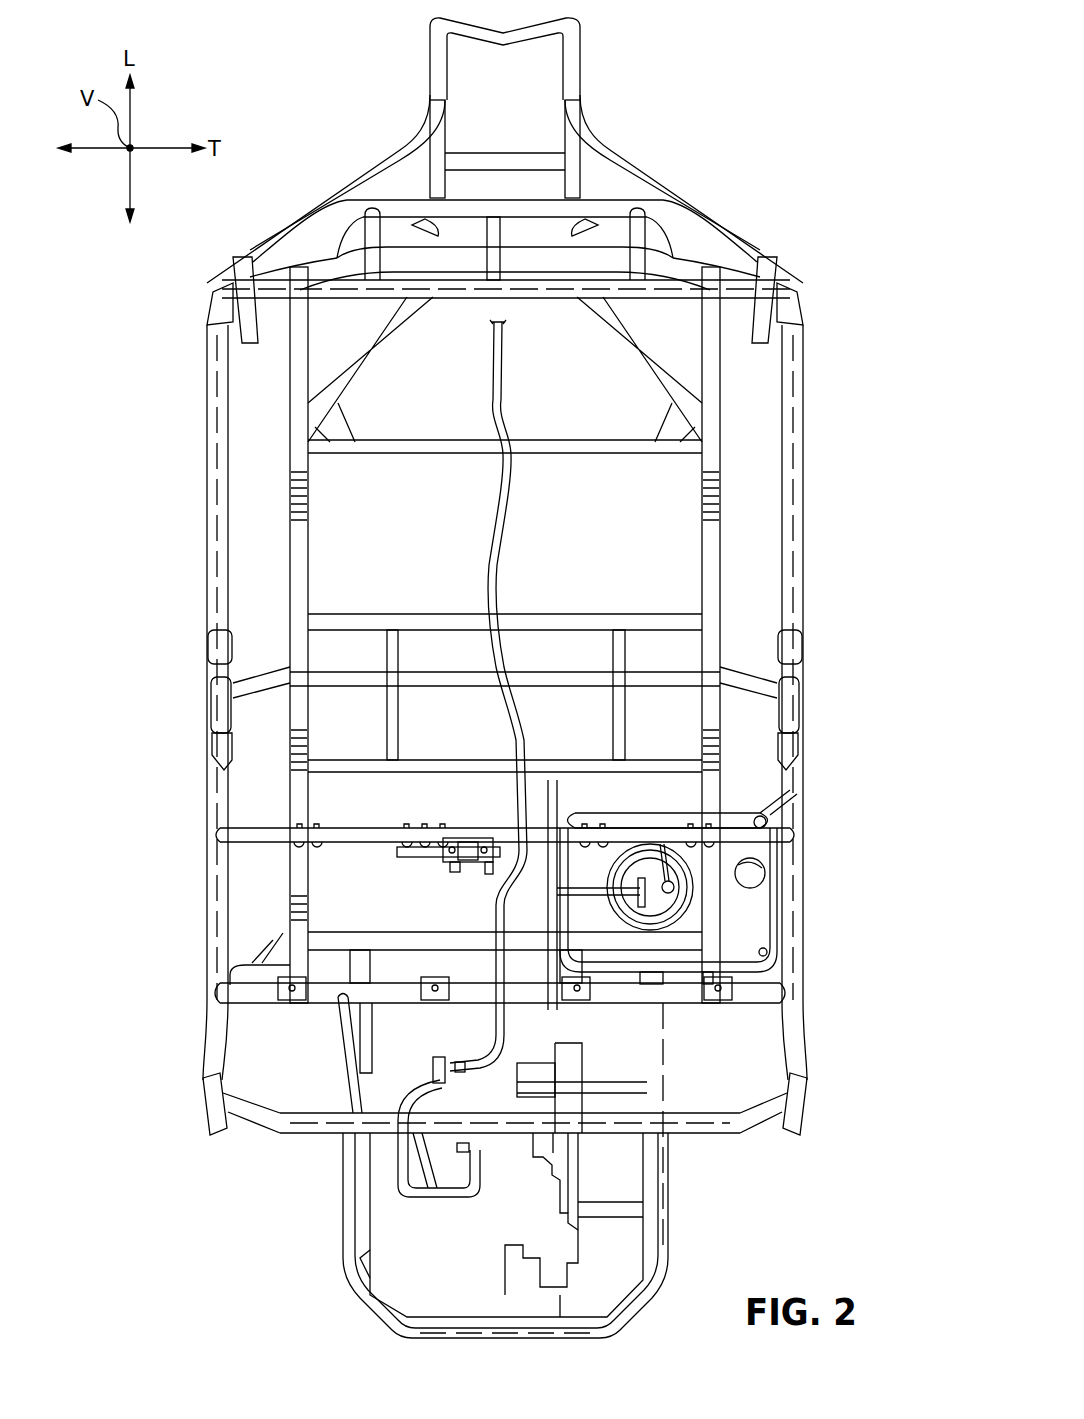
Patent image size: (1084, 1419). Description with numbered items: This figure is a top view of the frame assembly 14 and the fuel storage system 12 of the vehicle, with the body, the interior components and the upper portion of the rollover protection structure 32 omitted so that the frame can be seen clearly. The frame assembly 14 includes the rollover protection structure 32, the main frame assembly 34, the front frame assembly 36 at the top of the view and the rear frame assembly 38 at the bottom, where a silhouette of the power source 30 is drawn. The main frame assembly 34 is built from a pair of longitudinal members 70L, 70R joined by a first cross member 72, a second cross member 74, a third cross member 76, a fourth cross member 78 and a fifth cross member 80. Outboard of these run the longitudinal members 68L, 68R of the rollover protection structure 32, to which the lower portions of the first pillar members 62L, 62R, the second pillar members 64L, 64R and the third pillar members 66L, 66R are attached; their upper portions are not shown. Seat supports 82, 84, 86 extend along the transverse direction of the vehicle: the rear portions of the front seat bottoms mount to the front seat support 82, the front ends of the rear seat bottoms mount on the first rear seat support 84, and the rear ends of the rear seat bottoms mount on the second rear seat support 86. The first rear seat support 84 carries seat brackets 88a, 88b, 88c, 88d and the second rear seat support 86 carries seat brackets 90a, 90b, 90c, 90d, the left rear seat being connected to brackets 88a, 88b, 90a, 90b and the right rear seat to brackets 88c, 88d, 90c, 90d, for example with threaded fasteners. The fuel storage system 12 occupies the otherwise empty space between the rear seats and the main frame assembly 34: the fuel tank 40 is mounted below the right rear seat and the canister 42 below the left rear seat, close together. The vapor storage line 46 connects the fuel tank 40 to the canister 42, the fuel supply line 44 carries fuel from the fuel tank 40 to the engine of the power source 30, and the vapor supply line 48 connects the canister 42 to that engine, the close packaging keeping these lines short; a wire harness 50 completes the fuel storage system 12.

The fuel storage system 12 is at (378, 905).
The frame assembly 14 is at (668, 124).
The power source 30 is at (432, 1258).
The rollover protection structure 32 is at (812, 548).
The main frame assembly 34 is at (722, 478).
The front frame assembly 36 is at (358, 143).
The rear frame assembly 38 is at (338, 1277).
The fuel tank 40 is at (762, 925).
The canister 42 is at (420, 863).
The fuel supply line 44 is at (595, 900).
The vapor storage line 46 is at (680, 857).
The vapor supply line 48 is at (500, 920).
The wire harness 50 is at (502, 550).
The left first pillar member 62L is at (212, 333).
The right first pillar member 62R is at (770, 257).
The left second pillar member 64L is at (228, 772).
The right second pillar member 64R is at (785, 713).
The left third pillar member 66L is at (205, 1125).
The right third pillar member 66R is at (810, 1075).
The left longitudinal member 68L is at (207, 452).
The right longitudinal member 68R is at (793, 371).
The left longitudinal member 70L is at (290, 430).
The right longitudinal member 70R is at (723, 605).
The first cross member 72 is at (675, 258).
The second cross member 74 is at (381, 453).
The third cross member 76 is at (375, 614).
The fourth cross member 78 is at (297, 777).
The fifth cross member 80 is at (292, 932).
The front seat support 82 is at (232, 665).
The first rear seat support 84 is at (222, 828).
The second rear seat support 86 is at (248, 997).
The seat bracket 88a is at (323, 830).
The seat bracket 88b is at (428, 832).
The seat bracket 88c is at (605, 830).
The seat bracket 88d is at (692, 830).
The seat bracket 90a is at (297, 1003).
The seat bracket 90b is at (428, 1003).
The seat bracket 90c is at (583, 1003).
The seat bracket 90d is at (715, 1003).